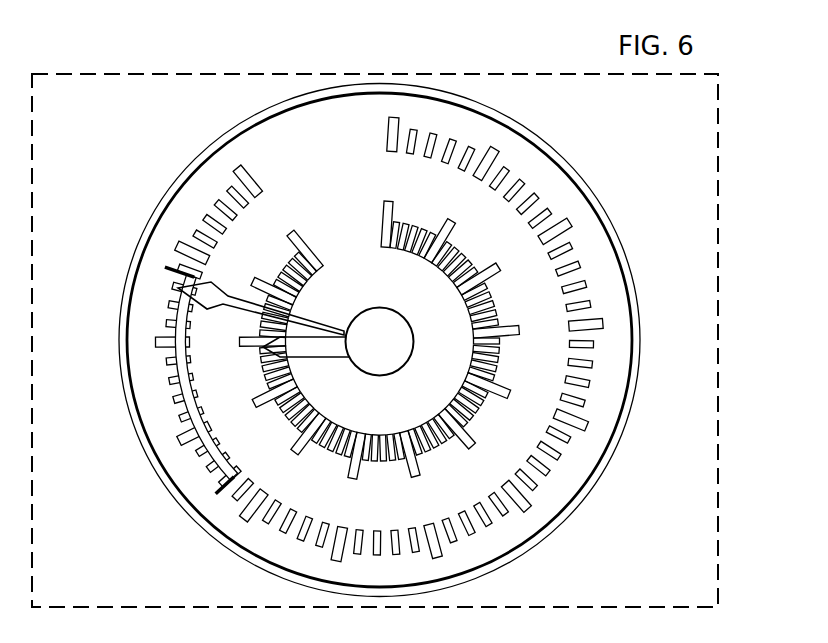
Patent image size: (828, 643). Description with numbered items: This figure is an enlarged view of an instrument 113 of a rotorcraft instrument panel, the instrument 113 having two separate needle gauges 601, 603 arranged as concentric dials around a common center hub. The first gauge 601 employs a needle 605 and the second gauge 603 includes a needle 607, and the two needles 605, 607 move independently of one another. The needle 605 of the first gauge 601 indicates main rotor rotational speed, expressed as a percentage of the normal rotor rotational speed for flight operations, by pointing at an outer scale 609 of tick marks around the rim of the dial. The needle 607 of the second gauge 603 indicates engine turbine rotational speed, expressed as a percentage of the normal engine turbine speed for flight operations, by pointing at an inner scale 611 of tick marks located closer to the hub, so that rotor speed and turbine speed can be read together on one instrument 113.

The instrument 113 is at (174, 180).
The needle gauge 601 is at (182, 408).
The needle gauge 603 is at (332, 461).
The needle 605 is at (228, 310).
The needle 607 is at (311, 358).
The outer scale 609 is at (603, 325).
The inner scale 611 is at (505, 393).